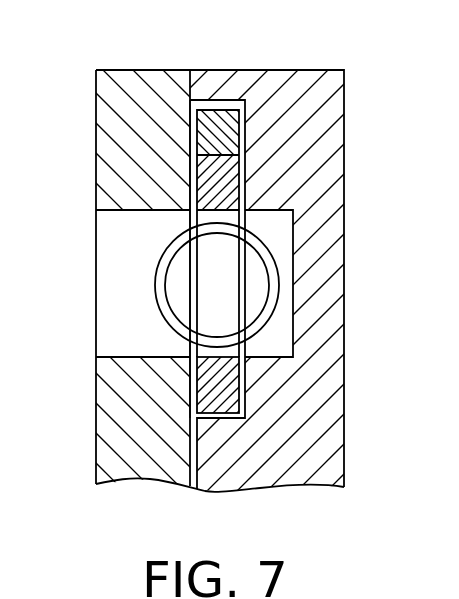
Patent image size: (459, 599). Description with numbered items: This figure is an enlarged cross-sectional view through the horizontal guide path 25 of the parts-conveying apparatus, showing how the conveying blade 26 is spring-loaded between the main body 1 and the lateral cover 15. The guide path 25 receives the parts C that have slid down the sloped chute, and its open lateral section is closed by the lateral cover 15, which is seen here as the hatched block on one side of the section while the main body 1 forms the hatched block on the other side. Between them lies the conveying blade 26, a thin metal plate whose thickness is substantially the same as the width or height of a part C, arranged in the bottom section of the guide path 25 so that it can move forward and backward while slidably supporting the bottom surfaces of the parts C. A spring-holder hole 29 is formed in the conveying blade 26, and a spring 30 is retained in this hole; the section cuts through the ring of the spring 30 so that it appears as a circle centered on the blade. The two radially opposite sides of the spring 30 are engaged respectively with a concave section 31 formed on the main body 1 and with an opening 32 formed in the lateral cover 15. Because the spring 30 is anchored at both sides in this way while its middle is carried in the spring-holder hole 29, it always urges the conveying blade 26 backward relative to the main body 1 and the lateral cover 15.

The main body 1 is at (330, 440).
The lateral cover 15 is at (115, 416).
The horizontal guide path 25 is at (244, 124).
The conveying blade 26 is at (212, 400).
The spring-holder hole 29 is at (212, 272).
The spring 30 is at (280, 300).
The concave section 31 is at (277, 212).
The opening 32 is at (125, 310).
The part C is at (210, 118).